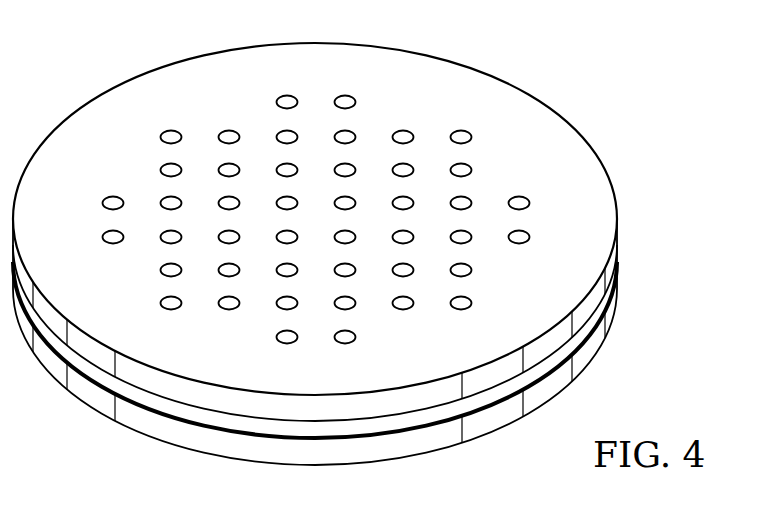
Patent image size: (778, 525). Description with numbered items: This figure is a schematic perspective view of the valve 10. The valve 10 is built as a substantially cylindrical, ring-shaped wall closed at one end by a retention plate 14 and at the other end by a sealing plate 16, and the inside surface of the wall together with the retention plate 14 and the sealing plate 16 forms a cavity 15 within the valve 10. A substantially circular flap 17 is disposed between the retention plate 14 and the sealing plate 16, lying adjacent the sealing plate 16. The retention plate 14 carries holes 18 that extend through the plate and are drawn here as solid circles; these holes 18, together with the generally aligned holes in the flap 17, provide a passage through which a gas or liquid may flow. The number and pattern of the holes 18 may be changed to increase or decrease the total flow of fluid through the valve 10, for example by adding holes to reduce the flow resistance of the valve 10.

The valve 10 is at (541, 61).
The retention plate 14 is at (90, 110).
The cavity 15 is at (367, 427).
The sealing plate 16 is at (400, 450).
The flap 17 is at (203, 430).
The holes 18 is at (403, 130).